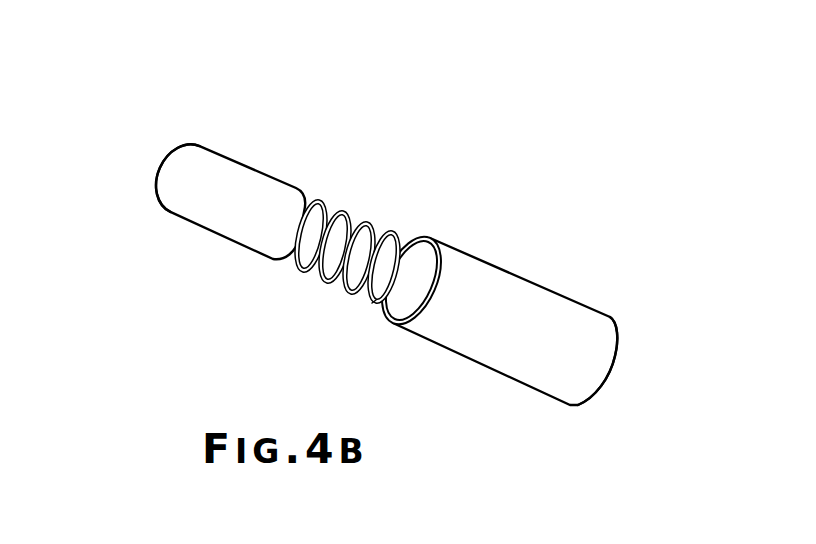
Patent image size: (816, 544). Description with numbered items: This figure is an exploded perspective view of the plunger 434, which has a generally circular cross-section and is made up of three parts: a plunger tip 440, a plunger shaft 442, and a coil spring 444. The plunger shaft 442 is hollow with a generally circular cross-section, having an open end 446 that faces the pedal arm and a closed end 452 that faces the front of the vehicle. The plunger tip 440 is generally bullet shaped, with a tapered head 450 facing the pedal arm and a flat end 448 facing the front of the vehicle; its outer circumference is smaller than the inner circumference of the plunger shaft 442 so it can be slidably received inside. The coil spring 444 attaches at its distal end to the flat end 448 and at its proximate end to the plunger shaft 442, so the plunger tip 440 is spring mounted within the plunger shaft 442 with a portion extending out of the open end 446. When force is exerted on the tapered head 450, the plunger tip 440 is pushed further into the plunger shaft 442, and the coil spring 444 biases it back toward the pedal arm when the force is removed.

The plunger 434 is at (232, 320).
The plunger tip 440 is at (230, 158).
The plunger shaft 442 is at (485, 262).
The coil spring 444 is at (360, 218).
The open end 446 is at (422, 272).
The flat end 448 is at (322, 223).
The tapered head 450 is at (158, 177).
The closed end 452 is at (615, 352).